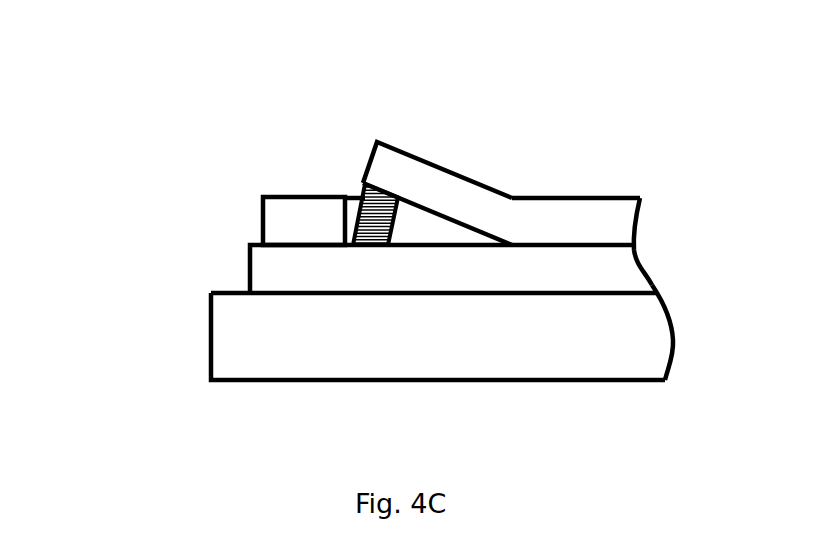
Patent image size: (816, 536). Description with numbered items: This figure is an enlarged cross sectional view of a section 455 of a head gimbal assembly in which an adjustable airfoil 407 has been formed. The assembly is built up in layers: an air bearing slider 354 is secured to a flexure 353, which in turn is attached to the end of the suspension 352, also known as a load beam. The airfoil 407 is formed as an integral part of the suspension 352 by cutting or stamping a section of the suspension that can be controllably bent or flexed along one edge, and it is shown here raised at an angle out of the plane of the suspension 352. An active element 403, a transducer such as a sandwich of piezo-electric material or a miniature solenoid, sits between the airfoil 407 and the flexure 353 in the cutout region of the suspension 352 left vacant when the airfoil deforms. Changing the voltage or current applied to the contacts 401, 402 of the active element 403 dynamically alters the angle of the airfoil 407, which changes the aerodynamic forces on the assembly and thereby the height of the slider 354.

The section of the HGA 455 is at (566, 58).
The contact 401 is at (363, 193).
The contact 402 is at (297, 197).
The active element 403 is at (353, 223).
The airfoil 407 is at (453, 171).
The suspension 352 is at (603, 216).
The flexure 353 is at (603, 276).
The air bearing slider 354 is at (413, 350).